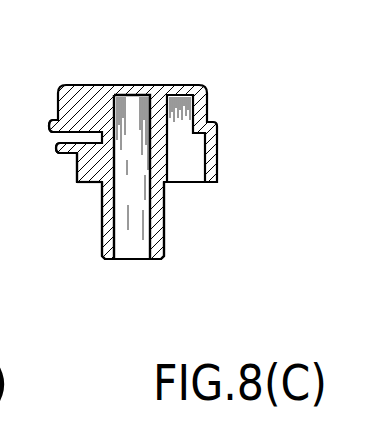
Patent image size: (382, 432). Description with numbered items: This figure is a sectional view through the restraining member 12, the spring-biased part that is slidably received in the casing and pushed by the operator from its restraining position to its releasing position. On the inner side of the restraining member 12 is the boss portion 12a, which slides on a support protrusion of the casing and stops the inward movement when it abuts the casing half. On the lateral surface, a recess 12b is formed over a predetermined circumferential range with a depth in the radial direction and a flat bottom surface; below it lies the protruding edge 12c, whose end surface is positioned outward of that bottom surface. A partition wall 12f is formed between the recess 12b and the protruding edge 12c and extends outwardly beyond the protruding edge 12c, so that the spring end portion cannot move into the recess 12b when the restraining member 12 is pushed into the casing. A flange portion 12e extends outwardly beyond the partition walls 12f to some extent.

The restraining member 12 is at (168, 66).
The boss portion 12a is at (165, 218).
The recess 12b is at (69, 155).
The protruding edge 12c is at (77, 184).
The flange portion 12e is at (50, 124).
The partition wall 12f is at (54, 153).